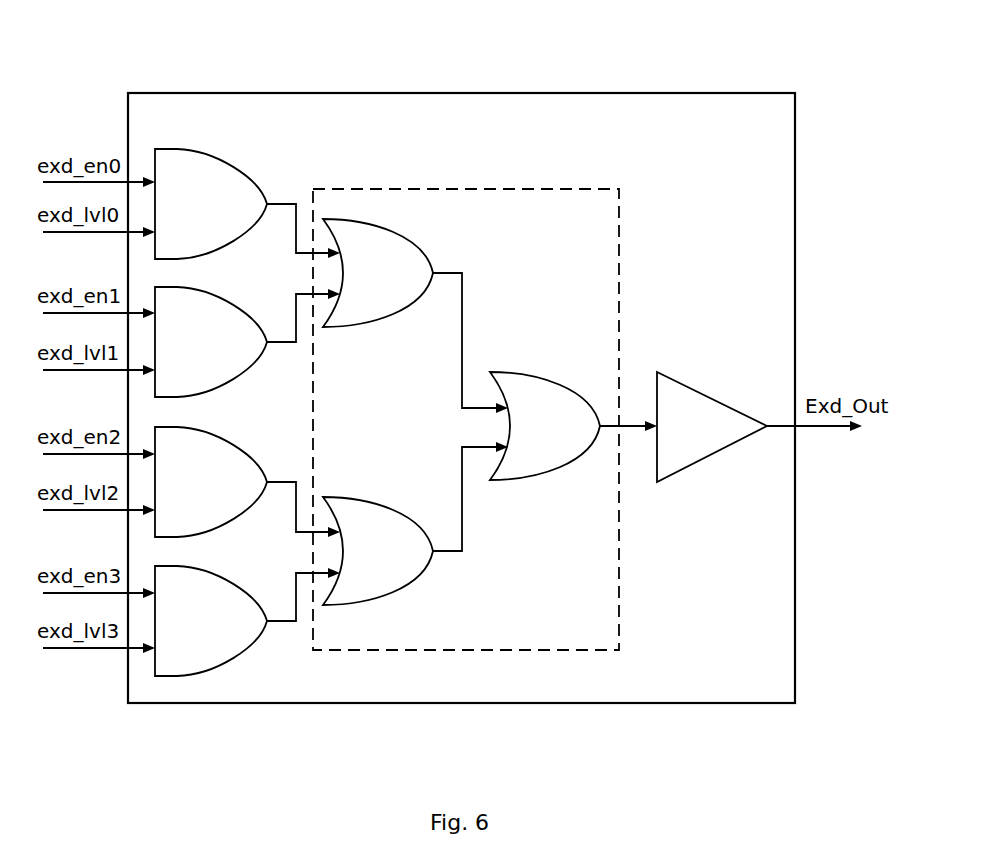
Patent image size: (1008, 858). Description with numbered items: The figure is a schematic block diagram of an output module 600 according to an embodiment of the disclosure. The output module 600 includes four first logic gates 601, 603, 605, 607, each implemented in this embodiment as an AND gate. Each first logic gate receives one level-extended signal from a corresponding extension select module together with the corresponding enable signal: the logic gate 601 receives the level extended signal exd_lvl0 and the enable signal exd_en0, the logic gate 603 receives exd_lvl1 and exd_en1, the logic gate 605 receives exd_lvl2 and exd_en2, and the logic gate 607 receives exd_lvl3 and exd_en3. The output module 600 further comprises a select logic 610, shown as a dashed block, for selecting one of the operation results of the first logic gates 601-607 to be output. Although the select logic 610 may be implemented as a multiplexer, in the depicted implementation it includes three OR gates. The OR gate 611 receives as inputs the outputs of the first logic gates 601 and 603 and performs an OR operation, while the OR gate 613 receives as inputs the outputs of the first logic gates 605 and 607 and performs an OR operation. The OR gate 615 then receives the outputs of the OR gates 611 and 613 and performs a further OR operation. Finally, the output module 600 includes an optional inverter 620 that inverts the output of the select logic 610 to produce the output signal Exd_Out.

The output module 600 is at (461, 398).
The first logic gate 601 is at (192, 148).
The first logic gate 603 is at (257, 367).
The first logic gate 605 is at (257, 457).
The first logic gate 607 is at (215, 670).
The select logic 610 is at (572, 188).
The OR gate 611 is at (410, 240).
The OR gate 613 is at (415, 583).
The OR gate 615 is at (557, 380).
The inverter 620 is at (677, 472).